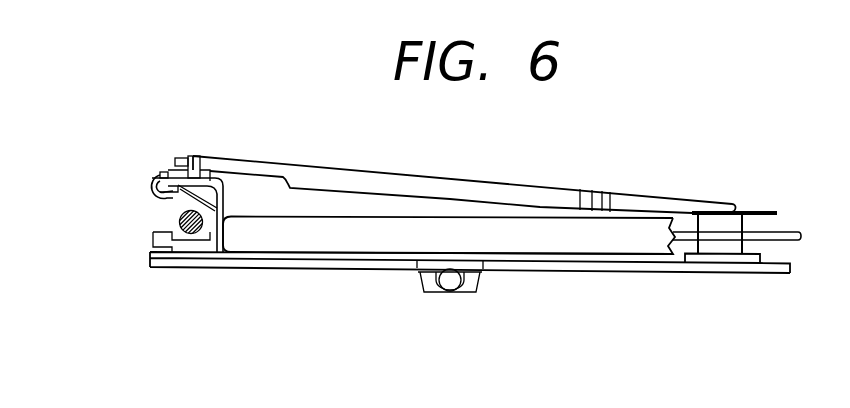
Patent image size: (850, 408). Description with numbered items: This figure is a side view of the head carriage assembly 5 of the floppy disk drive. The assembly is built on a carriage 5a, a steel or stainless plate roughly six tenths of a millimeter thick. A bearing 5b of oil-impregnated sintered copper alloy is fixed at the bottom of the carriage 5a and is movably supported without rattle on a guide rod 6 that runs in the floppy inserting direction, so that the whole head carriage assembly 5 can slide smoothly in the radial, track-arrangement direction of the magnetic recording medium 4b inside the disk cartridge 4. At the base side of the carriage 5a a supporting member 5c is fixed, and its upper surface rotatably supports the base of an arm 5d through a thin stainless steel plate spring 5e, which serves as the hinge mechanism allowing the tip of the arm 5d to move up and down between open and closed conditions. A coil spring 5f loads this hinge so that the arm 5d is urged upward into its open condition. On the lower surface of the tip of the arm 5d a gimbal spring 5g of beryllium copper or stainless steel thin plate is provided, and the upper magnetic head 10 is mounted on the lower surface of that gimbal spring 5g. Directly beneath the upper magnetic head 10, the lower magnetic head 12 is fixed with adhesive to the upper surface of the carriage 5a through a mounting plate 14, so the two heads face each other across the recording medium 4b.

The disk cartridge 4 is at (619, 226).
The magnetic recording medium 4b is at (791, 232).
The head carriage assembly 5 is at (557, 176).
The carriage 5a is at (608, 269).
The bearing 5b is at (418, 285).
The supporting member 5c is at (197, 178).
The arm 5d is at (465, 185).
The plate spring 5e is at (243, 177).
The coil spring 5f is at (150, 176).
The gimbal spring 5g is at (716, 208).
The guide rod 6 is at (449, 285).
The upper magnetic head 10 is at (735, 222).
The lower magnetic head 12 is at (718, 252).
The mounting plate 14 is at (753, 264).